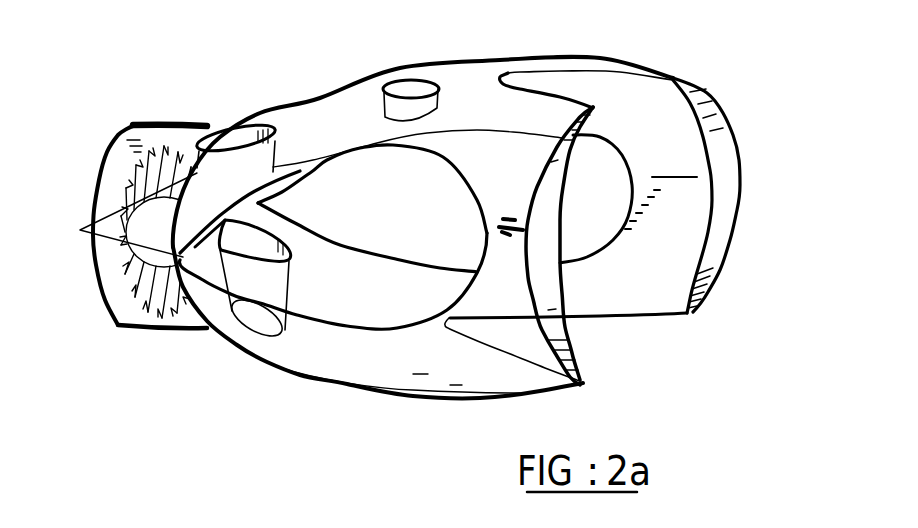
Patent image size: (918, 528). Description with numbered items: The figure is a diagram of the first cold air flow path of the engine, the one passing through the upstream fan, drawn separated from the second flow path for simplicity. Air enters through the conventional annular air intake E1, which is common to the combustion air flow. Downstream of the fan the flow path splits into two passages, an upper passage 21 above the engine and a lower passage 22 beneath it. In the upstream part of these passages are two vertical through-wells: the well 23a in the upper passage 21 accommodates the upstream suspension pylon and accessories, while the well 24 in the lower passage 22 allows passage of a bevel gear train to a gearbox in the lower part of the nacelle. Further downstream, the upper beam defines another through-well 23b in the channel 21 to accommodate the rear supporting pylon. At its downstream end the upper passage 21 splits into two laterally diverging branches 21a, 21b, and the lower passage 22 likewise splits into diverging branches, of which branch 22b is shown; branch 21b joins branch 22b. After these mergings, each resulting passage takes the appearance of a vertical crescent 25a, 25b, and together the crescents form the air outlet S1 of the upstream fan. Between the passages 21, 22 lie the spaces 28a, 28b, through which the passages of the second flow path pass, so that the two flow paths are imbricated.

The annular air intake E1 is at (107, 185).
The upper passage 21 is at (307, 130).
The branch of upper passage 21a is at (603, 63).
The branch of upper passage 21b is at (503, 147).
The lower passage 22 is at (290, 347).
The branch of lower passage 22b is at (497, 378).
The vertical through-well 23a is at (237, 138).
The through-well 23b is at (413, 88).
The vertical through-well 24 is at (253, 318).
The vertical crescent 25a is at (713, 125).
The vertical crescent 25b is at (558, 337).
The space between passages 28a is at (382, 173).
The space between passages 28b is at (360, 290).
The air outlet S1 is at (433, 362).